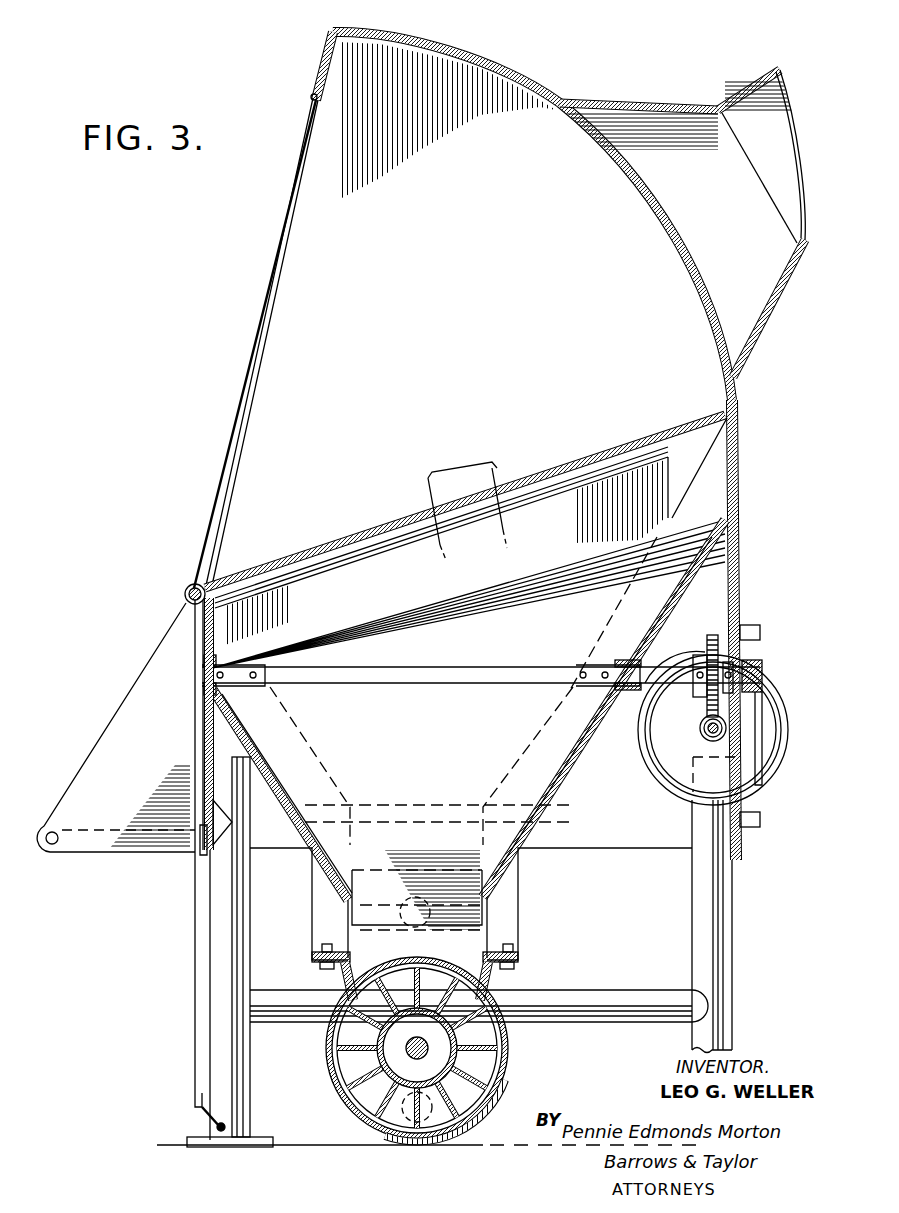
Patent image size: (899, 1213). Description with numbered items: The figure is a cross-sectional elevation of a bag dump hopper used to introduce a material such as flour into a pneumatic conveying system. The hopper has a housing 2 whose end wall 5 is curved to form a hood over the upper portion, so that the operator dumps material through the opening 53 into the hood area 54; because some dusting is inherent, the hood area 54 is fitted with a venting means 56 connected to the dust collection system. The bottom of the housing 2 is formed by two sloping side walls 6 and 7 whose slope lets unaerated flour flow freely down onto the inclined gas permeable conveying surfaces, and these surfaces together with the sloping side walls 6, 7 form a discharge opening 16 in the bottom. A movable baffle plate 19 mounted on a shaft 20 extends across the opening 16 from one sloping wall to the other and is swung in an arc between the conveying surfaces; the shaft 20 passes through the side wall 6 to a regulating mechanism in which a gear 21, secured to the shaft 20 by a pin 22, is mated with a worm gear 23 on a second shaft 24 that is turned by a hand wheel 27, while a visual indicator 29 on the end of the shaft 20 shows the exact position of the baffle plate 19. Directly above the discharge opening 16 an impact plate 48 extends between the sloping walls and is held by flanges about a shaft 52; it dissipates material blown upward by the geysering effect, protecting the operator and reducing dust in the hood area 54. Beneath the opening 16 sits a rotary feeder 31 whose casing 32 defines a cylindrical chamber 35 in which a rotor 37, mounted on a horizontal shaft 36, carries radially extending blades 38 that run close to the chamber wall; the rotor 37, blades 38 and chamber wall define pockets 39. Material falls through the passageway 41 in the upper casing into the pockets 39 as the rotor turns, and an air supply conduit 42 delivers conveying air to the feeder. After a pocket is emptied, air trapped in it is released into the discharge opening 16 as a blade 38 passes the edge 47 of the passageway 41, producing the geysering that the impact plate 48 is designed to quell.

The housing 2 is at (499, 310).
The end wall 5 is at (500, 70).
The sloping side wall 6 is at (540, 810).
The sloping side wall 7 is at (300, 825).
The discharge opening 16 is at (465, 962).
The baffle plate 19 is at (520, 830).
The shaft 20 is at (657, 680).
The gear 21 is at (712, 635).
The pin 22 is at (703, 700).
The worm gear 23 is at (700, 732).
The shaft 24 is at (704, 742).
The hand wheel 27 is at (757, 670).
The visual indicator 29 is at (760, 760).
The rotary feeder 31 is at (490, 1098).
The casing 32 is at (415, 1049).
The cylindrical chamber 35 is at (335, 1070).
The shaft 36 is at (417, 1048).
The rotor 37 is at (340, 1055).
The blades 38 is at (347, 1040).
The pockets 39 is at (372, 1105).
The passageway 41 is at (345, 975).
The air supply conduit 42 is at (430, 1138).
The edge 47 is at (360, 995).
The impact plate 48 is at (700, 557).
The shaft 52 is at (735, 430).
The opening 53 is at (236, 478).
The hood area 54 is at (548, 130).
The venting means 56 is at (668, 118).